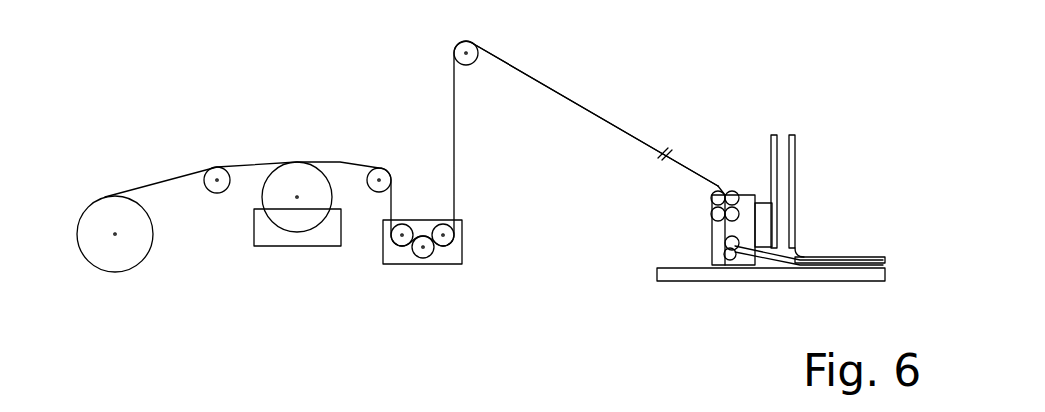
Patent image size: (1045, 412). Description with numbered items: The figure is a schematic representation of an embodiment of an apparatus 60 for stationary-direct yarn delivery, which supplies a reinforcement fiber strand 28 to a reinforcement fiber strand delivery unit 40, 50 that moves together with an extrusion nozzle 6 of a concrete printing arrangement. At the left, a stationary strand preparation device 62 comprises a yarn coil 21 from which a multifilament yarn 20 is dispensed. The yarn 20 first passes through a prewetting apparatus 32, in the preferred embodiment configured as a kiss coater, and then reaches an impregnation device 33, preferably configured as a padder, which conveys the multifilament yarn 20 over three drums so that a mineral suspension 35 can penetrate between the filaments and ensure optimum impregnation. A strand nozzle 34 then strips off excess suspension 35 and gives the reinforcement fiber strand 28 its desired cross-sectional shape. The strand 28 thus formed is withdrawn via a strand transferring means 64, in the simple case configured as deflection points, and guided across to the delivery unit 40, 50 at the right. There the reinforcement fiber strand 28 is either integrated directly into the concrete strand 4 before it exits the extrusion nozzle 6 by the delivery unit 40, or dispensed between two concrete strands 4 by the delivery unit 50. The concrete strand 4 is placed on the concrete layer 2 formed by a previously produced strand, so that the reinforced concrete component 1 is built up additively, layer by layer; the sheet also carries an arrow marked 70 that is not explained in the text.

The concrete component 1 is at (873, 247).
The concrete layer 2 is at (688, 276).
The concrete strand 4 is at (778, 142).
The extrusion nozzle 6 is at (815, 252).
The multifilament yarn 20 is at (152, 182).
The yarn coil 21 is at (100, 215).
The reinforcement fiber strand 28 is at (543, 83).
The prewetting apparatus 32 is at (263, 238).
The impregnation device 33 is at (429, 281).
The strand nozzle 34 is at (457, 183).
The mineral suspension 35 is at (462, 263).
The reinforcement fiber strand delivery unit 40 is at (717, 184).
The reinforcement fiber strand delivery unit 50 is at (733, 166).
The apparatus 60 is at (684, 65).
The strand preparation device 62 is at (200, 113).
The strand transferring means 64 is at (456, 47).
The transport direction 70 is at (597, 407).